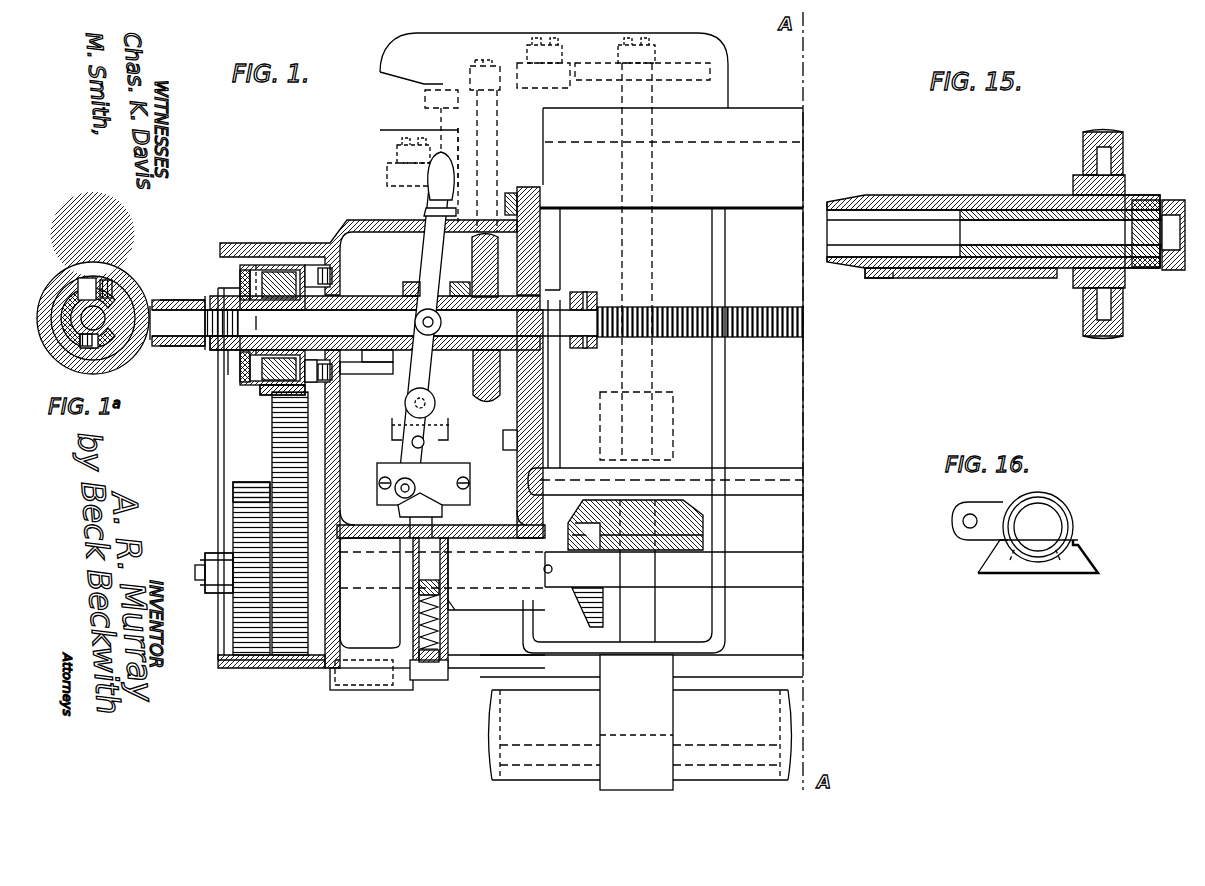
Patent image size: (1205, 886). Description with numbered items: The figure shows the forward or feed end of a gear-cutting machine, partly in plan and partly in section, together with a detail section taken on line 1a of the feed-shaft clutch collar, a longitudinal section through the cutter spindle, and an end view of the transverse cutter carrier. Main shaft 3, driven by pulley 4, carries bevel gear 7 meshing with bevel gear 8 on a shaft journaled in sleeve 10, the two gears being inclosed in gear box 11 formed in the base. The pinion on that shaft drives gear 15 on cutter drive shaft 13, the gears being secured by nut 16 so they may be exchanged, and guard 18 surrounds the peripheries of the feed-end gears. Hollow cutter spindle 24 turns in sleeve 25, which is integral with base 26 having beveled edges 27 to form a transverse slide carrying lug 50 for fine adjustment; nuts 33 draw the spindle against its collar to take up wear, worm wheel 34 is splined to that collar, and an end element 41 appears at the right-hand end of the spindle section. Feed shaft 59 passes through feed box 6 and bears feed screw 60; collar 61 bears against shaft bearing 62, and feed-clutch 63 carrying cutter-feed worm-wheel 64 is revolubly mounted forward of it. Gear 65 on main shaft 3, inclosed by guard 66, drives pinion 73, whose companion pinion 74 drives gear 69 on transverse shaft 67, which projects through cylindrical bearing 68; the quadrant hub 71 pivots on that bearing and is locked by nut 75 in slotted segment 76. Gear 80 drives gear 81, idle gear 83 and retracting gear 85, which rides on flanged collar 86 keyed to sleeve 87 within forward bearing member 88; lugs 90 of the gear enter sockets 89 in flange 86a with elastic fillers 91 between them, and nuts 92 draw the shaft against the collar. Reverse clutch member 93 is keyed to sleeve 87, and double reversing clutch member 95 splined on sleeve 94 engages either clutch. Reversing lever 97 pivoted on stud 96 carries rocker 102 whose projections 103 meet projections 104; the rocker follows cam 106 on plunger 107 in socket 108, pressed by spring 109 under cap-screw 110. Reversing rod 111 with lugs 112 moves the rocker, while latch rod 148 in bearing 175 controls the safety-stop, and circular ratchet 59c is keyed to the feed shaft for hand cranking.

In FIG. 1, the section line 1a is at (256, 265).
In FIG. 1, the main shaft 3 is at (658, 618).
In FIG. 1, the pulley 4 is at (492, 735).
In FIG. 1, the feed box 6 is at (347, 222).
In FIG. 1, the bevel gear 7 is at (700, 520).
In FIG. 1, the bevel gear 8 is at (575, 612).
In FIG. 1, the sleeve 10 is at (485, 668).
In FIG. 1, the gear box 11 is at (723, 618).
In FIG. 1, the cutter drive shaft 13 is at (200, 567).
In FIG. 1, the gear 15 is at (236, 616).
In FIG. 1, the nut 16 is at (215, 590).
In FIG. 1, the guard 18 is at (222, 668).
In FIG. 15, the hollow cutter spindle 24 is at (942, 212).
In FIG. 15, the sleeve 25 is at (990, 195).
In FIG. 16, the sleeve 25 is at (1073, 528).
In FIG. 15, the base 26 is at (873, 278).
In FIG. 16, the base 26 is at (1040, 573).
In FIG. 16, the beveled edges 27 is at (1088, 567).
In FIG. 15, the nuts 33 is at (1148, 200).
In FIG. 15, the worm wheel 34 is at (1125, 160).
In FIG. 15, the end cap 41 is at (1172, 270).
In FIG. 16, the lug 50 is at (962, 538).
In FIG. 1, the feed shaft 59 is at (176, 302).
In FIG. 1, the circular ratchet 59c is at (206, 312).
In FIG. 1, the feed screw 60 is at (762, 337).
In FIG. 1, the collar 61 is at (584, 292).
In FIG. 1, the shaft bearing 62 is at (562, 360).
In FIG. 1, the feed-clutch 63 is at (465, 282).
In FIG. 1, the cutter-feed worm-wheel 64 is at (502, 245).
In FIG. 1, the gear 65 is at (668, 70).
In FIG. 1, the guard 66 is at (729, 74).
In FIG. 1, the transverse shaft 67 is at (474, 125).
In FIG. 1, the cylindrical bearing 68 is at (380, 130).
In FIG. 1, the gear 69 is at (420, 80).
In FIG. 1, the hub 71 is at (431, 90).
In FIG. 1, the pinion 73 is at (517, 70).
In FIG. 1, the pinion 74 is at (578, 92).
In FIG. 1, the nut 75 is at (387, 152).
In FIG. 1, the slotted segment 76 is at (430, 178).
In FIG. 1, the gear 80 is at (282, 655).
In FIG. 1, the gear 81 is at (240, 505).
In FIG. 1, the idle gear 83 is at (272, 440).
In FIG. 1, the gear 85 is at (275, 265).
In FIG. 1, the flanged collar 86 is at (288, 268).
In FIG. 1, the flange 86a is at (245, 275).
In FIG. 1A, the flange 86a is at (140, 350).
In FIG. 1, the sleeve 87 is at (230, 350).
In FIG. 1, the forward bearing member 88 is at (240, 385).
In FIG. 1A, the sockets 89 is at (108, 283).
In FIG. 1, the lugs 90 is at (238, 360).
In FIG. 1A, the lugs 90 is at (82, 282).
In FIG. 1A, the elastic fillers 91 is at (110, 300).
In FIG. 1, the nuts 92 is at (222, 350).
In FIG. 1, the reverse clutch member 93 is at (370, 365).
In FIG. 1, the sleeve 94 is at (395, 300).
In FIG. 1, the double reversing clutch member 95 is at (465, 365).
In FIG. 1, the stud 96 is at (427, 405).
In FIG. 1, the reversing lever 97 is at (428, 235).
In FIG. 1, the rocker 102 is at (395, 458).
In FIG. 1, the projections 103 is at (392, 425).
In FIG. 1, the projections 104 is at (395, 415).
In FIG. 1, the cam 106 is at (418, 497).
In FIG. 1, the plunger 107 is at (455, 563).
In FIG. 1, the socket 108 is at (460, 598).
In FIG. 1, the spring 109 is at (440, 622).
In FIG. 1, the cap-screw 110 is at (428, 680).
In FIG. 1, the reversing rod 111 is at (790, 488).
In FIG. 1, the lugs 112 is at (380, 480).
In FIG. 1, the latch rod 148 is at (812, 668).
In FIG. 1, the bearing 175 is at (330, 680).